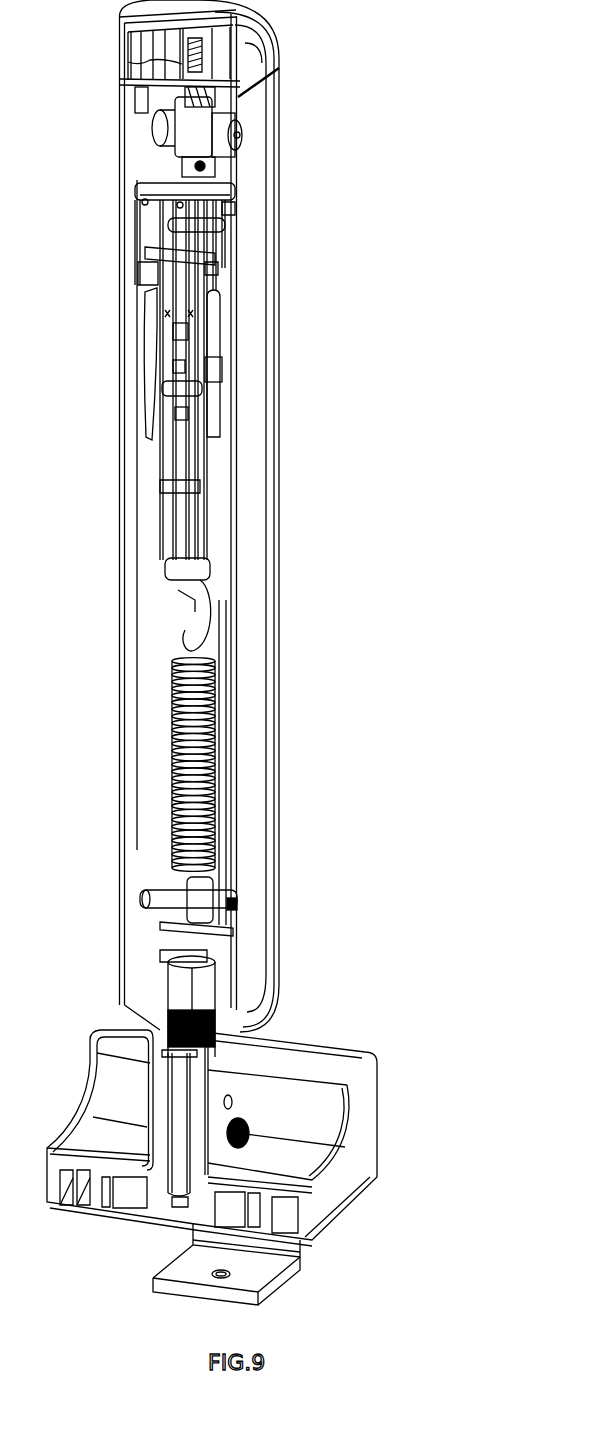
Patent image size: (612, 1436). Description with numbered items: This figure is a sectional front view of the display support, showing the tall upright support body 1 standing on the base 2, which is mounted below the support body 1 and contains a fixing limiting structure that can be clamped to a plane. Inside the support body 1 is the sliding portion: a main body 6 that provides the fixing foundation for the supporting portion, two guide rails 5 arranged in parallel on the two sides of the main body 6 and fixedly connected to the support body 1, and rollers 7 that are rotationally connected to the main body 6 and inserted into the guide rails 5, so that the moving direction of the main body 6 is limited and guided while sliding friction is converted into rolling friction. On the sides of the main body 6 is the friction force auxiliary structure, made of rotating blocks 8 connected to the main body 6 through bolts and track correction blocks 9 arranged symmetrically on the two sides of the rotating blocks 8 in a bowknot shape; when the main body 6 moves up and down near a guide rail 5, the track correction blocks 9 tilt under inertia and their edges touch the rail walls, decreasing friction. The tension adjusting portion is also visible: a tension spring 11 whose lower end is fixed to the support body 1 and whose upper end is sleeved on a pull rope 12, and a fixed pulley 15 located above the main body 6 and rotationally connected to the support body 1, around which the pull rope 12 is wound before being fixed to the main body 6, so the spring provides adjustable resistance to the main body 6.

The support body 1 is at (255, 555).
The base 2 is at (275, 1098).
The guide rail 5 is at (222, 800).
The main body 6 is at (180, 428).
The roller 7 is at (222, 242).
The rotating block 8 is at (218, 363).
The track correction block 9 is at (210, 312).
The tension spring 11 is at (212, 722).
The pull rope 12 is at (205, 586).
The fixed pulley 15 is at (240, 130).